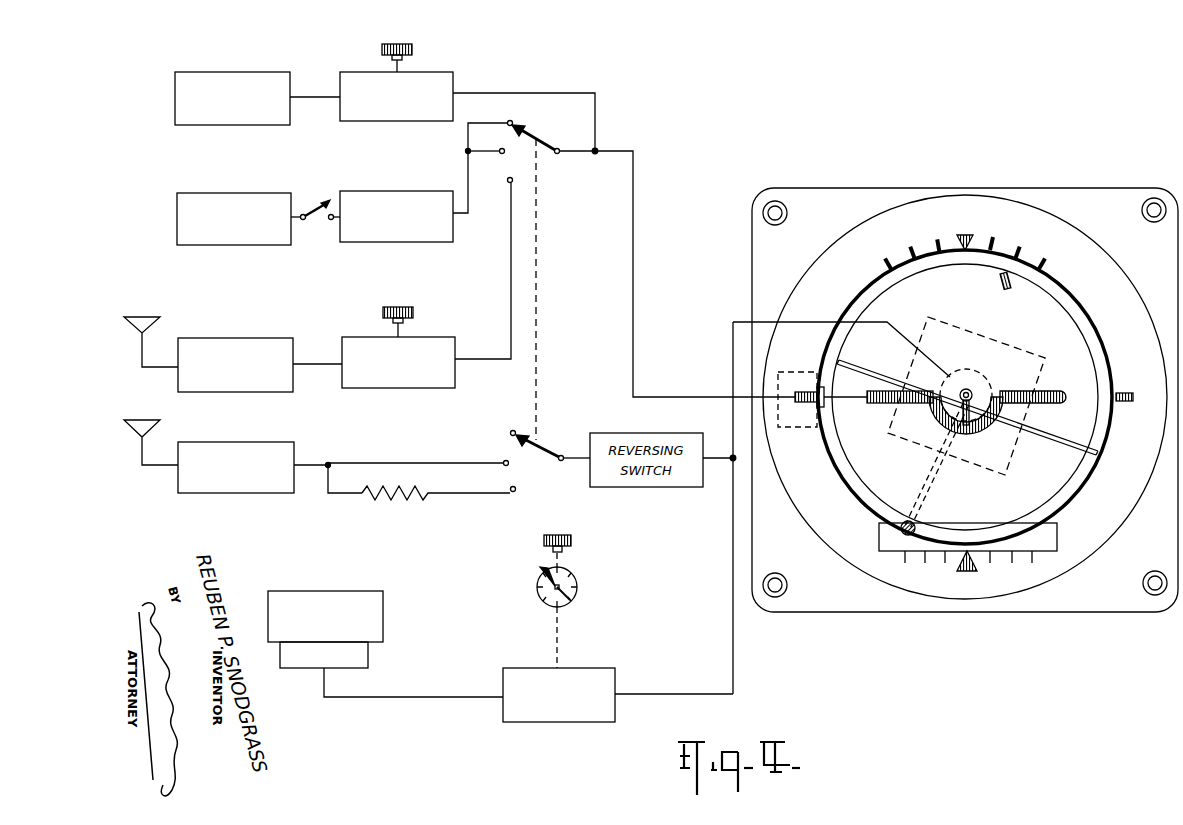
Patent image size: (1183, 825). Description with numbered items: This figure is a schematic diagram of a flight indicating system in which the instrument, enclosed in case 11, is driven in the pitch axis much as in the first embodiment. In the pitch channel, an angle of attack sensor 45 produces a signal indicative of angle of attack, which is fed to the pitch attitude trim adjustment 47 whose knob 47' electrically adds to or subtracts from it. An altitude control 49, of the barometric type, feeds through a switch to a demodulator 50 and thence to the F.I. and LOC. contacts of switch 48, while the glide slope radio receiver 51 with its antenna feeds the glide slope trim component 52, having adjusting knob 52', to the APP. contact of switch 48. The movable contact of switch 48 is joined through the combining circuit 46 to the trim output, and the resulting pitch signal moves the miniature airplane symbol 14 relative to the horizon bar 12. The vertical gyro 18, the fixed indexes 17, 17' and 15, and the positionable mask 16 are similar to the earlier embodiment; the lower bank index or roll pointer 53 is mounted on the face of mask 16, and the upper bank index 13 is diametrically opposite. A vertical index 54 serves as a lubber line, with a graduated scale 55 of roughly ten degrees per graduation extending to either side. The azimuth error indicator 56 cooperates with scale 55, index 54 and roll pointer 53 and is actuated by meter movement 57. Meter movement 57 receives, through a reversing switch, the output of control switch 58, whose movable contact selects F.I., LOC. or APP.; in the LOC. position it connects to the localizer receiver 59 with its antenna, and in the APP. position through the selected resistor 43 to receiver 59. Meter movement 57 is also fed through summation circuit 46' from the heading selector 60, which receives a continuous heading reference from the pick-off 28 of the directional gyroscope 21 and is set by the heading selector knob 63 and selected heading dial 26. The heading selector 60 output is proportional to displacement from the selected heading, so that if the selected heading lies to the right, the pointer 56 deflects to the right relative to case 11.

The case 11 is at (834, 229).
The horizon bar 12 is at (1045, 448).
The upper bank index 13 is at (1010, 287).
The miniature airplane symbol 14 is at (1058, 391).
The fixed index 15 is at (1060, 238).
The mask 16 is at (960, 299).
The fixed index 17 is at (822, 383).
The fixed index 17' is at (1133, 370).
The vertical gyro 18 is at (960, 396).
The directional gyroscope 21 is at (320, 591).
The selected heading dial 26 is at (548, 565).
The pick-off 28 is at (292, 668).
The resistor 43 is at (395, 500).
The angle of attack sensor 45 is at (240, 125).
The combining circuit 46 is at (624, 245).
The summation circuit 46' is at (819, 508).
The pitch attitude trim adjustment 47 is at (396, 113).
The knob 47' is at (428, 43).
The switch 48 is at (548, 140).
The altitude control 49 is at (238, 245).
The demodulator 50 is at (398, 242).
The glide slope radio receiver 51 is at (243, 338).
The glide slope trim component 52 is at (398, 377).
The adjusting knob 52' is at (427, 308).
The roll pointer 53 is at (928, 514).
The vertical index 54 is at (958, 568).
The graduated scale 55 is at (1035, 557).
The azimuth error indicator 56 is at (900, 529).
The meter movement 57 is at (990, 380).
The control switch 58 is at (553, 447).
The localizer receiver 59 is at (235, 493).
The heading selector 60 is at (590, 668).
The heading selector knob 63 is at (571, 540).